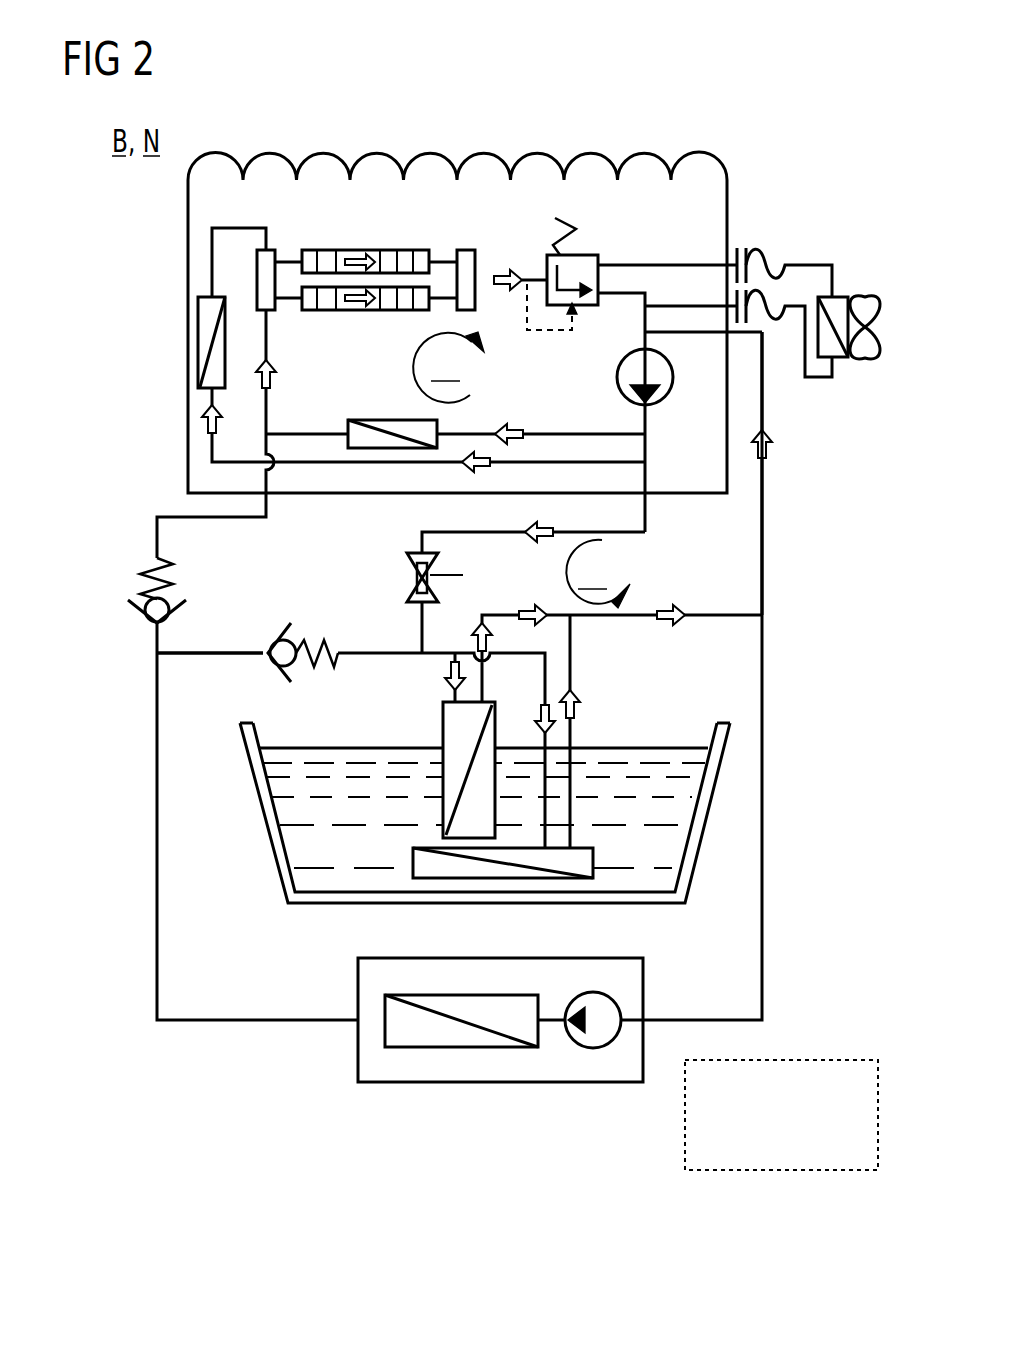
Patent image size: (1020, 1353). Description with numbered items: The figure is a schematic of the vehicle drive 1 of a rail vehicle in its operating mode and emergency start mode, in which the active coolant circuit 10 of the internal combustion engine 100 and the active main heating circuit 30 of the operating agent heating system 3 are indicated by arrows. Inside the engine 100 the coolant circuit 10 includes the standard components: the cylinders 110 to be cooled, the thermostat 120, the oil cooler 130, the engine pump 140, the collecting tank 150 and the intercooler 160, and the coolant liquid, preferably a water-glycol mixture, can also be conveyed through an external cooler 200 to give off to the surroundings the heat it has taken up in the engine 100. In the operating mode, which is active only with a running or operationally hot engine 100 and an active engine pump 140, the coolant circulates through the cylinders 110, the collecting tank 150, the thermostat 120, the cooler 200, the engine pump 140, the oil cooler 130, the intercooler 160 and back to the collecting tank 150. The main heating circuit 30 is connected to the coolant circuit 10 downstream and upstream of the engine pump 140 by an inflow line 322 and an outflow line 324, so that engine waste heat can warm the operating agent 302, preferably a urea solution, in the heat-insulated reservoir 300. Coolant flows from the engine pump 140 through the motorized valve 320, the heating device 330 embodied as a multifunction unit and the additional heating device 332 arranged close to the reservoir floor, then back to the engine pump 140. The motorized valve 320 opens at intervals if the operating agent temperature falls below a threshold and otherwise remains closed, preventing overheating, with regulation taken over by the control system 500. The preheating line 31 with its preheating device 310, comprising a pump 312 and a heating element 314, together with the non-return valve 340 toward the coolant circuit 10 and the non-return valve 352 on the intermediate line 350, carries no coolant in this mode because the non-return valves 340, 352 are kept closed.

The vehicle drive 1 is at (782, 107).
The operating agent heating system 3 is at (112, 500).
The coolant circuit 10 is at (645, 318).
The main heating circuit 30 is at (451, 733).
The preheating line 31 is at (166, 516).
The internal combustion engine 100 is at (727, 177).
The cylinders 110 is at (360, 250).
The thermostat 120 is at (580, 255).
The oil cooler 130 is at (393, 420).
The engine pump 140 is at (617, 377).
The collecting tank 150 is at (270, 250).
The intercooler 160 is at (198, 340).
The external cooler 200 is at (841, 296).
The reservoir 300 is at (452, 793).
The operating agent 302 is at (313, 750).
The preheating device 310 is at (544, 1046).
The pump 312 is at (592, 1049).
The heating element 314 is at (418, 1049).
The motorized valve 320 is at (410, 594).
The inflow line 322 is at (647, 518).
The outflow line 324 is at (764, 488).
The heating device 330 is at (443, 730).
The additional heating device 332 is at (505, 880).
The non-return valve 340 is at (141, 616).
The intermediate line 350 is at (210, 651).
The non-return valve 352 is at (279, 634).
The control system 500 is at (716, 1171).